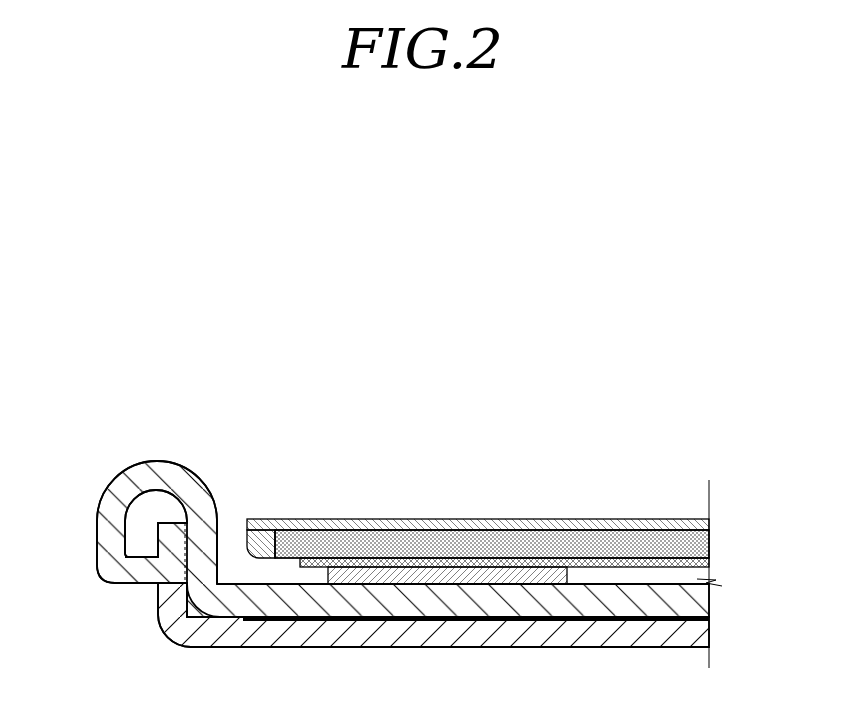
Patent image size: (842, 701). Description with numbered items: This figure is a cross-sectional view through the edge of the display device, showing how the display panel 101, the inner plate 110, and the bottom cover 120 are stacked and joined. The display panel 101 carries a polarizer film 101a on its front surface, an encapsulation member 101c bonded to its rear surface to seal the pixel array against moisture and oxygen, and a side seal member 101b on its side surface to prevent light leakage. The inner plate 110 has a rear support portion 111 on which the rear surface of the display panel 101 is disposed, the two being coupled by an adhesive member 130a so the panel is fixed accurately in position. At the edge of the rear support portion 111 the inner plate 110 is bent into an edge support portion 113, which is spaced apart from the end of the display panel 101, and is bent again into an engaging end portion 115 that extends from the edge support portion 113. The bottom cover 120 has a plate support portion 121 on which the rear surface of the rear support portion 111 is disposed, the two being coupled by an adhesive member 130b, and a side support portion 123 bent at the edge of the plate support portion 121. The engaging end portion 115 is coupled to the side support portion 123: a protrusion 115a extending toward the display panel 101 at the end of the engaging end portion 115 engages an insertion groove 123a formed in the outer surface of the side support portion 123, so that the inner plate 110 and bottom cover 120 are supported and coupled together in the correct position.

The display panel 101 is at (362, 545).
The polarizer film 101a is at (435, 525).
The side seal member 101b is at (258, 545).
The encapsulation member 101c is at (620, 552).
The inner plate 110 is at (713, 598).
The rear support portion 111 is at (495, 600).
The edge support portion 113 is at (207, 544).
The engaging end portion 115 is at (112, 505).
The protrusion 115a is at (150, 562).
The bottom cover 120 is at (713, 633).
The plate support portion 121 is at (322, 635).
The side support portion 123 is at (168, 607).
The insertion groove 123a is at (170, 588).
The adhesive member 130a is at (431, 577).
The adhesive member 130b is at (603, 621).